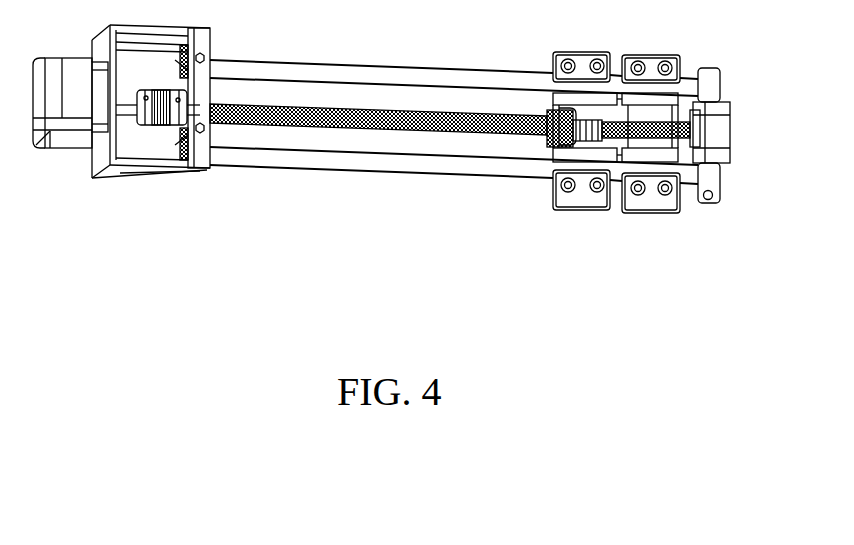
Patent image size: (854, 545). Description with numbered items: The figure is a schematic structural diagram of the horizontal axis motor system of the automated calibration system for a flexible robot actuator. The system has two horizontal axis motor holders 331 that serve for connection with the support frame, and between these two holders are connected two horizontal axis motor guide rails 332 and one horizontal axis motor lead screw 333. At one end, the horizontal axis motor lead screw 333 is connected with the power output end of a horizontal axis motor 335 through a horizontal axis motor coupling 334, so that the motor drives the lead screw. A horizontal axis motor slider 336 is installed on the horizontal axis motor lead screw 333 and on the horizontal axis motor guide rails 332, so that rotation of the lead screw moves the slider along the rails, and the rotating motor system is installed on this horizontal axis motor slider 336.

The horizontal axis motor holder 331 is at (713, 202).
The horizontal axis motor guide rail 332 is at (283, 155).
The horizontal axis motor lead screw 333 is at (387, 128).
The horizontal axis motor coupling 334 is at (157, 127).
The horizontal axis motor 335 is at (50, 130).
The horizontal axis motor slider 336 is at (600, 208).